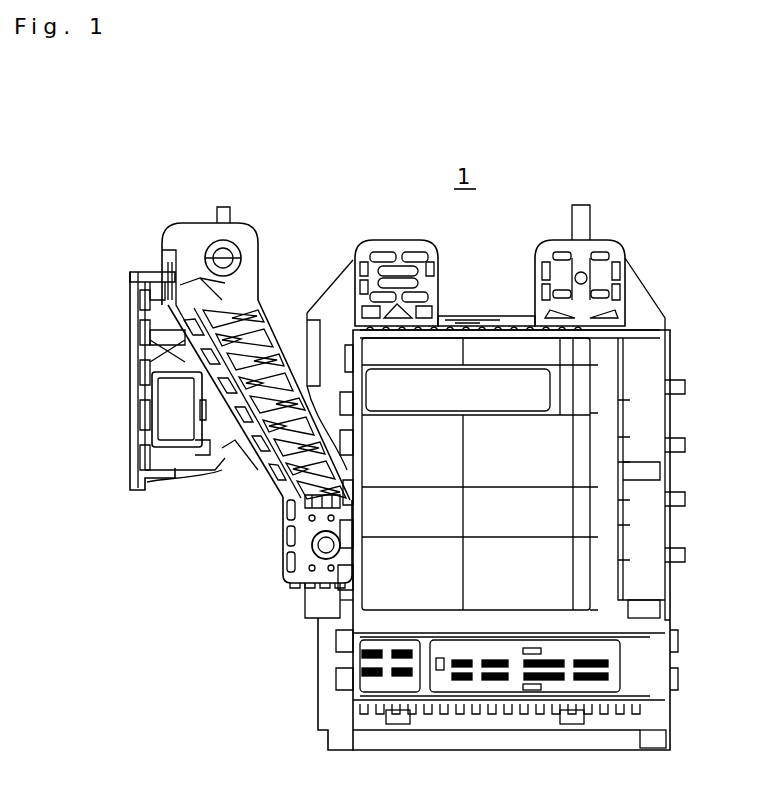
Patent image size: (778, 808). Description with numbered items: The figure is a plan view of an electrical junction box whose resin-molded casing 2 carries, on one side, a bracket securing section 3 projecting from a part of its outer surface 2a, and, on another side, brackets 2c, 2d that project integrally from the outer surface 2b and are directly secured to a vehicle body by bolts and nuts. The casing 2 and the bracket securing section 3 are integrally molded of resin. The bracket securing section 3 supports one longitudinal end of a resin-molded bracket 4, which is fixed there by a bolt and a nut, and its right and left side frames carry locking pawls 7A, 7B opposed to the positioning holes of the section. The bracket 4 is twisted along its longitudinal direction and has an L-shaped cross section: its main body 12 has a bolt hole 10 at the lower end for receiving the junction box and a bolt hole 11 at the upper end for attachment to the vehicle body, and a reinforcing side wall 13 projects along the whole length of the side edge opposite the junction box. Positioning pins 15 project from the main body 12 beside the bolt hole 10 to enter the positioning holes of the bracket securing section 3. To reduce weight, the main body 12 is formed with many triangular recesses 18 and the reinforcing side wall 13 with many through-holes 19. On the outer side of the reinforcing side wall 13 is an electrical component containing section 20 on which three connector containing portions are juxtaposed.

The casing 2 is at (665, 352).
The outer surface 2a is at (352, 445).
The outer surface 2b is at (493, 315).
The bracket 2c is at (436, 247).
The bracket 2d is at (616, 250).
The bracket securing section 3 is at (322, 620).
The bracket 4 is at (262, 478).
The locking pawl 7A is at (302, 501).
The locking pawl 7B is at (318, 587).
The bolt hole 10 is at (310, 580).
The bolt hole 11 is at (234, 257).
The main body 12 is at (197, 248).
The reinforcing side wall 13 is at (165, 248).
The positioning pins 15 is at (292, 535).
The triangular recesses 18 is at (245, 458).
The through-holes 19 is at (322, 549).
The electrical component containing section 20 is at (130, 320).